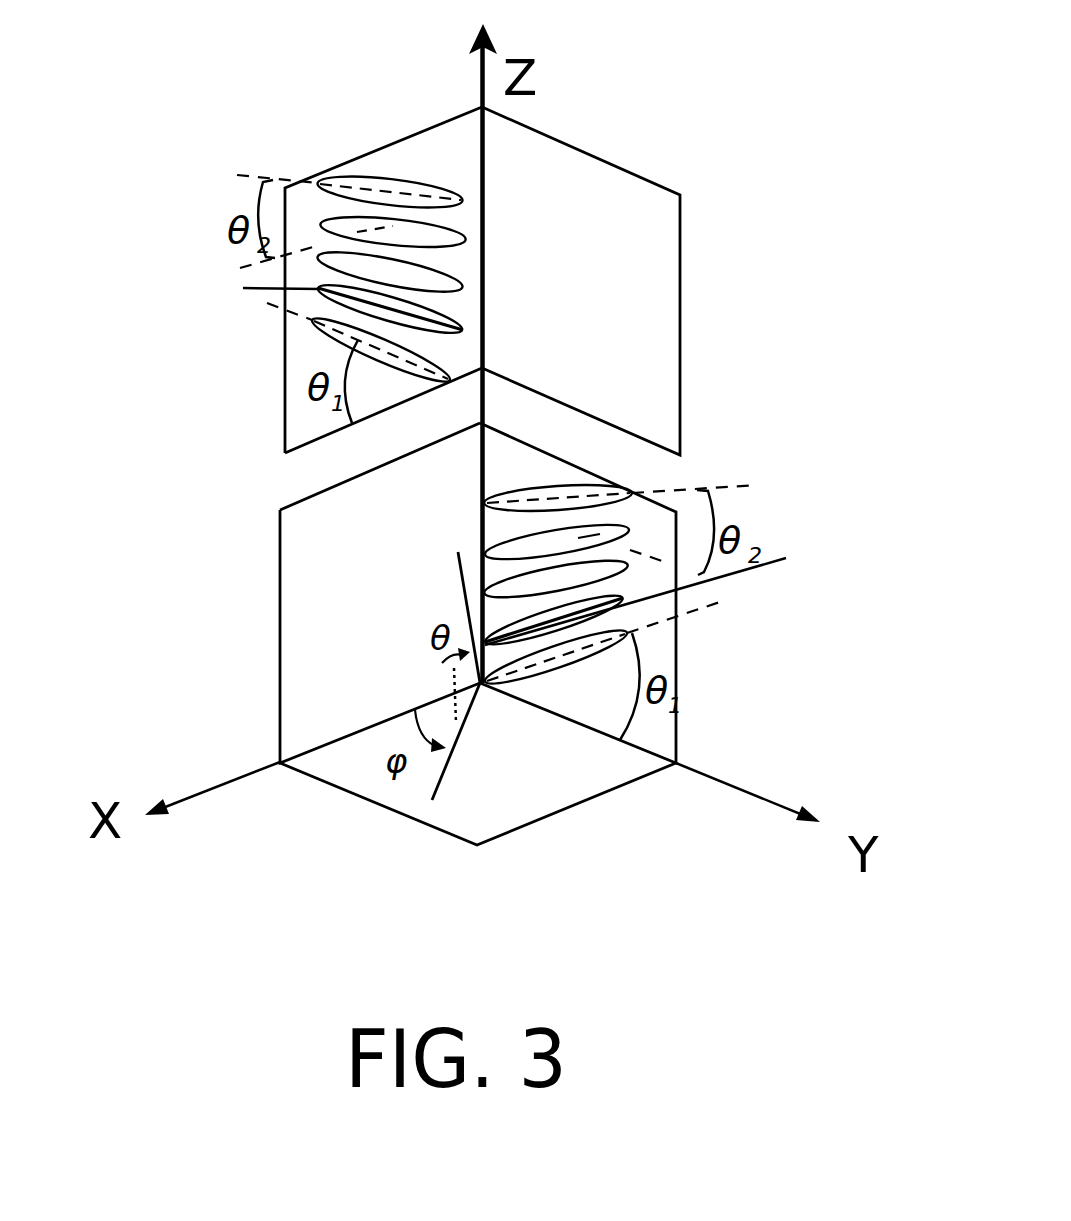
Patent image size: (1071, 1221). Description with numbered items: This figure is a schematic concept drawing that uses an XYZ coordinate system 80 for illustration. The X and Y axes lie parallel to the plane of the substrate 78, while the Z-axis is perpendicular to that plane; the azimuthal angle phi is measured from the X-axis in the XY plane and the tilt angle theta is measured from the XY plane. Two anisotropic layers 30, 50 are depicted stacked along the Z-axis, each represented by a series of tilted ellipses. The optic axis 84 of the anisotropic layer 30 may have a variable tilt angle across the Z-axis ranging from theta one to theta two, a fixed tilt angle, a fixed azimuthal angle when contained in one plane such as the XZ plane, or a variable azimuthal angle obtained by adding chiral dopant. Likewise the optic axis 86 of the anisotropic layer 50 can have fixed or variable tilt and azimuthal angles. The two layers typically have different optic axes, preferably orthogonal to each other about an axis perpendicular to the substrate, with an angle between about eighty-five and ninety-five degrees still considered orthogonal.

The anisotropic layer 30 is at (428, 162).
The anisotropic layer 50 is at (663, 657).
The substrate 78 is at (563, 818).
The XYZ coordinate system 80 is at (568, 60).
The optic axis 84 is at (237, 279).
The optic axis 86 is at (658, 595).